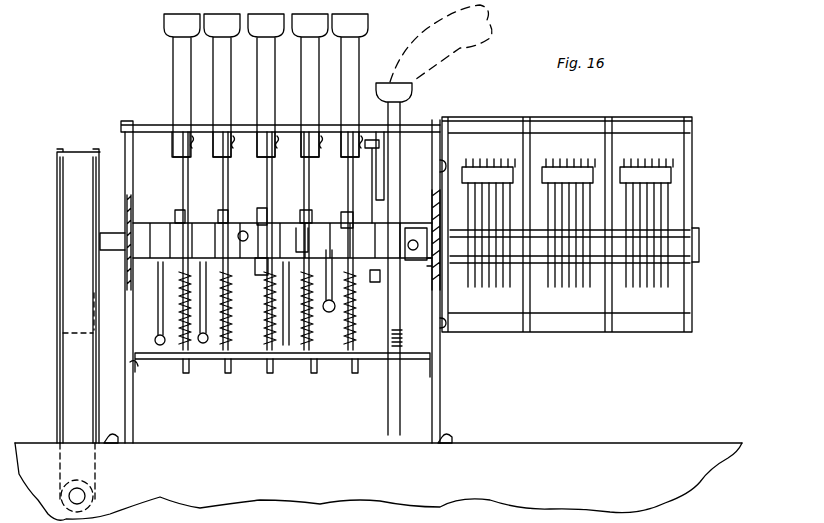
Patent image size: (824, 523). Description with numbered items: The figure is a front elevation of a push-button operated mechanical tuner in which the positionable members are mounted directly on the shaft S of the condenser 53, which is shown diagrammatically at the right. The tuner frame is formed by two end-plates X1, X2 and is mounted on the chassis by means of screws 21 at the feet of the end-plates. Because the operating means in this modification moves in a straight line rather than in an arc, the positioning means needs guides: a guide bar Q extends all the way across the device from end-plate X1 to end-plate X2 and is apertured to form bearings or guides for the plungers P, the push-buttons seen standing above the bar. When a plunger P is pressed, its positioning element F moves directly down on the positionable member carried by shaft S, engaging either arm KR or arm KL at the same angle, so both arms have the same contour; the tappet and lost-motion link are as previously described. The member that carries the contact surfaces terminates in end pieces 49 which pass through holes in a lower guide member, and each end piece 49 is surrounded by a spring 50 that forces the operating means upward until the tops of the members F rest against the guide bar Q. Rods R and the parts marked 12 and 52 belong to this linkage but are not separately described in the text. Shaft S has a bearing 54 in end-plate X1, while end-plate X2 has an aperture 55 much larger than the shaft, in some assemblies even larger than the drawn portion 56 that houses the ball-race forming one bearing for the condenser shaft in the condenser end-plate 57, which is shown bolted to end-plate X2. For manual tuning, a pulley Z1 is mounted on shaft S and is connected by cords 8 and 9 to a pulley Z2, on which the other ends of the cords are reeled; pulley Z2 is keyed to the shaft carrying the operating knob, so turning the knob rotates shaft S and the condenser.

The plunger P is at (172, 66).
The guide bar Q is at (145, 124).
The rod R is at (372, 140).
The positioning element F is at (168, 152).
The push rod 12 is at (178, 206).
The arm KR is at (176, 225).
The arm KL is at (262, 208).
The shaft S is at (115, 228).
The bearing 54 is at (125, 260).
The aperture 55 is at (426, 226).
The drawn portion 56 is at (434, 276).
The condenser end-plate 57 is at (458, 168).
The condenser 53 is at (543, 106).
The spring 50 is at (266, 334).
The end piece 49 is at (184, 372).
The bar 52 is at (140, 371).
The cord 9 is at (94, 359).
The cord 8 is at (64, 427).
The screw 21 is at (113, 434).
The end-plate X1 is at (134, 419).
The end-plate X2 is at (440, 397).
The pulley Z1 is at (80, 152).
The pulley Z2 is at (93, 503).